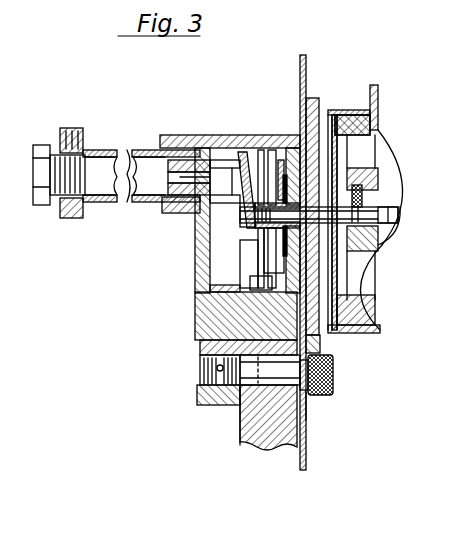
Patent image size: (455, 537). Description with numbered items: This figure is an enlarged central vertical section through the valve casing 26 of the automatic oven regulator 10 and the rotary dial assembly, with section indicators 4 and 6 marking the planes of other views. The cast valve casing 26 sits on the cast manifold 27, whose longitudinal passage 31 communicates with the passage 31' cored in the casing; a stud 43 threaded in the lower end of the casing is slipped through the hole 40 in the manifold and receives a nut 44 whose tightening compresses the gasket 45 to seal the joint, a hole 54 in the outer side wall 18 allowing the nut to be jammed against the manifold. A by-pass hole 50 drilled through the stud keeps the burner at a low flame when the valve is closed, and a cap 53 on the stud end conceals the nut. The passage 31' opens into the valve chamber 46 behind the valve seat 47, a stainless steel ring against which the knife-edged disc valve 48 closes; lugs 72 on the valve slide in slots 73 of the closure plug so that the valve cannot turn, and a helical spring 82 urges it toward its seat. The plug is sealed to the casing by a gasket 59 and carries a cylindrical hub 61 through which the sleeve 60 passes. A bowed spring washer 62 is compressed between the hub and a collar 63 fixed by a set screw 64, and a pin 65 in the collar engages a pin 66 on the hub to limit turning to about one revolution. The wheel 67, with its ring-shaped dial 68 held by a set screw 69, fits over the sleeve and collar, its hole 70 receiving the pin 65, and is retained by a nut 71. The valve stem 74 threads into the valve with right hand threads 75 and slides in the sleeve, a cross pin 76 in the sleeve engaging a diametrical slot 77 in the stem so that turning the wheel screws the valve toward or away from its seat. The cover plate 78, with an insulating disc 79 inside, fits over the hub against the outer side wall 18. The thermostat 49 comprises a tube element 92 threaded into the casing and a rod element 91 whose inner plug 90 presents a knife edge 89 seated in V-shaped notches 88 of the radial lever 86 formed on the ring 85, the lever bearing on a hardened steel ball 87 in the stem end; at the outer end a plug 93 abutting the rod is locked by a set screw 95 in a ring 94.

The section line 4- 4 is at (312, 59).
The section line 6- 6 is at (283, 128).
The automatic oven regulator 10 is at (357, 85).
The outer side wall 18 is at (305, 470).
The valve casing 26 is at (226, 137).
The manifold 27 is at (240, 440).
The longitudinal passage 31 is at (336, 420).
The passage 31' is at (171, 315).
The hole 40 is at (240, 346).
The stud 43 is at (204, 371).
The nut 44 is at (304, 369).
The gasket 45 is at (243, 406).
The valve chamber 46 is at (258, 142).
The valve seat 47 is at (255, 282).
The valve 48 is at (248, 262).
The thermostat 49 is at (104, 149).
The hole 50 is at (200, 383).
The cap 53 is at (334, 372).
The hole 54 is at (312, 394).
The gasket 59 is at (294, 140).
The sleeve 60 is at (348, 162).
The hub 61 is at (365, 284).
The spring washer 62 is at (362, 176).
The collar 63 is at (392, 246).
The set screw 64 is at (378, 186).
The pin 65 is at (378, 270).
The pin 66 is at (319, 215).
The wheel 67 is at (382, 328).
The dial 68 is at (372, 100).
The set screw 69 is at (378, 138).
The hole 70 is at (388, 258).
The nut 71 is at (400, 212).
The lugs 72 is at (264, 142).
The slots 73 is at (258, 300).
The valve stem 74 is at (400, 223).
The right hand threads 75 is at (273, 215).
The cross pin 76 is at (392, 198).
The diametrical slot 77 is at (346, 215).
The cover plate 78 is at (316, 100).
The disc 79 is at (320, 338).
The helical spring 82 is at (261, 283).
The ring 85 is at (232, 288).
The lever 86 is at (241, 222).
The ball 87 is at (254, 255).
The V-shaped notches 88 is at (237, 190).
The knife edge 89 is at (207, 140).
The plug 90 is at (165, 202).
The rod element 91 is at (100, 180).
The tube element 92 is at (145, 148).
The plug 93 is at (40, 146).
The ring 94 is at (70, 218).
The set screw 95 is at (68, 128).